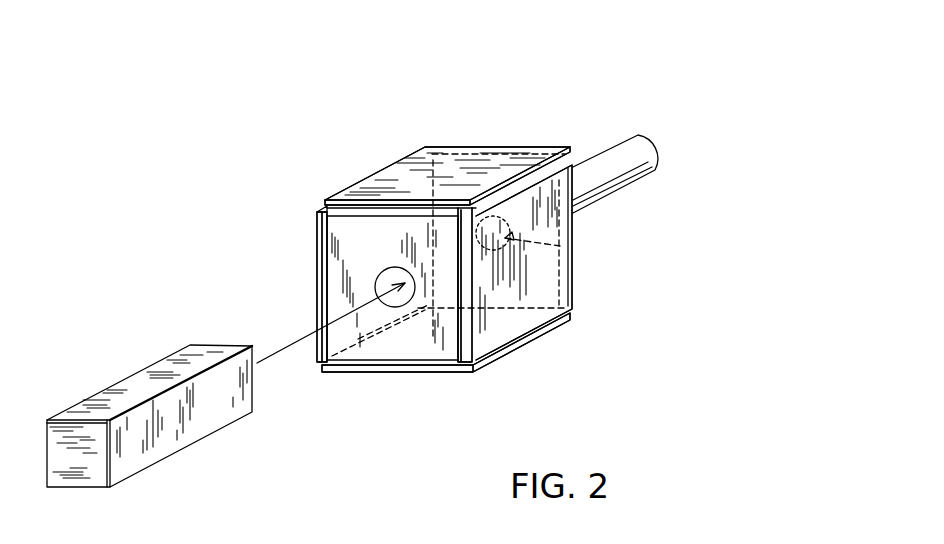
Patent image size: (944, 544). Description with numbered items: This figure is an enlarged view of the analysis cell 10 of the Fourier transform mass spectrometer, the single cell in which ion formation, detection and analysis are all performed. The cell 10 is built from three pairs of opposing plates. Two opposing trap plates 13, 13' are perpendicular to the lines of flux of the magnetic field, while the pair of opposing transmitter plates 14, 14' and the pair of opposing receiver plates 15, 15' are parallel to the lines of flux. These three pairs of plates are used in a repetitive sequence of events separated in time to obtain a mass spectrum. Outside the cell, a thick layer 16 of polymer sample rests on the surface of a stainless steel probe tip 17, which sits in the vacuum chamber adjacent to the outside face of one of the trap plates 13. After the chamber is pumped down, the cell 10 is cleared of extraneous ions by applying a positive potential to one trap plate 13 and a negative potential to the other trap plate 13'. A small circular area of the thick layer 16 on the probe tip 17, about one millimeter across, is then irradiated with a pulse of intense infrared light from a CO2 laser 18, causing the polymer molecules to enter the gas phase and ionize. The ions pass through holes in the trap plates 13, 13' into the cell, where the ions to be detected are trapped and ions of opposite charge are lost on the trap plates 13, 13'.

The analysis cell 10 is at (488, 143).
The trap plate 13 is at (567, 262).
The trap plate 13' is at (357, 318).
The transmitter plate 14 is at (293, 284).
The transmitter plate 14' is at (476, 324).
The receiver plate 15 is at (464, 156).
The receiver plate 15' is at (448, 351).
The thick layer 16 is at (513, 223).
The probe tip 17 is at (560, 246).
The CO2 laser 18 is at (147, 437).